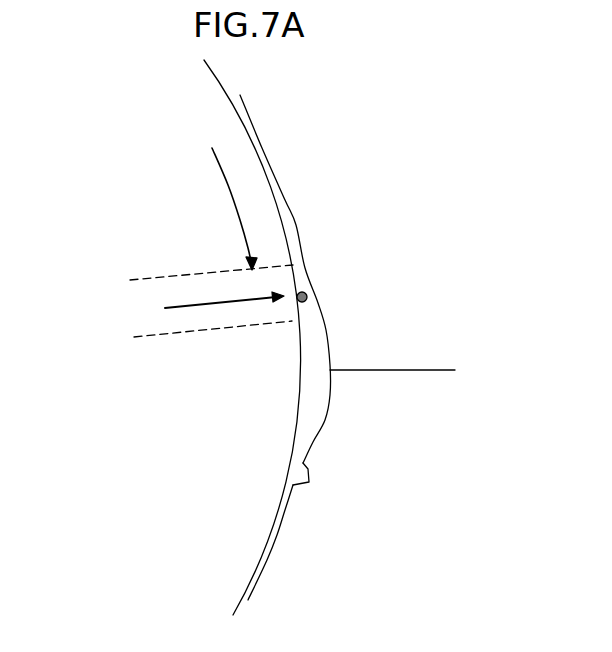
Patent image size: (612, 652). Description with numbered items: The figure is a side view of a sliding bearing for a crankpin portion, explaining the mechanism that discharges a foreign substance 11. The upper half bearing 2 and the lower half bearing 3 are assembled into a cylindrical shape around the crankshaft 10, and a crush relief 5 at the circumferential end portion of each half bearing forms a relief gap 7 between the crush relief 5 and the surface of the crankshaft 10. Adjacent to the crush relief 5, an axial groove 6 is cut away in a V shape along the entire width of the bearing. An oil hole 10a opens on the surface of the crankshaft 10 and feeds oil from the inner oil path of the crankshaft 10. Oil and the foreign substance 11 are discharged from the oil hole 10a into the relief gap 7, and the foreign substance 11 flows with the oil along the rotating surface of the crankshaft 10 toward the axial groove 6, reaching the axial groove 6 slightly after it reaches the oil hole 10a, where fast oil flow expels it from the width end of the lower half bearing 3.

The upper half bearing 2 is at (357, 167).
The lower half bearing 3 is at (358, 538).
The crush relief 5 is at (328, 325).
The axial groove 6 is at (308, 471).
The relief gap 7 is at (318, 365).
The crankshaft 10 is at (167, 190).
The oil hole 10a is at (293, 313).
The foreign substance 11 is at (306, 295).